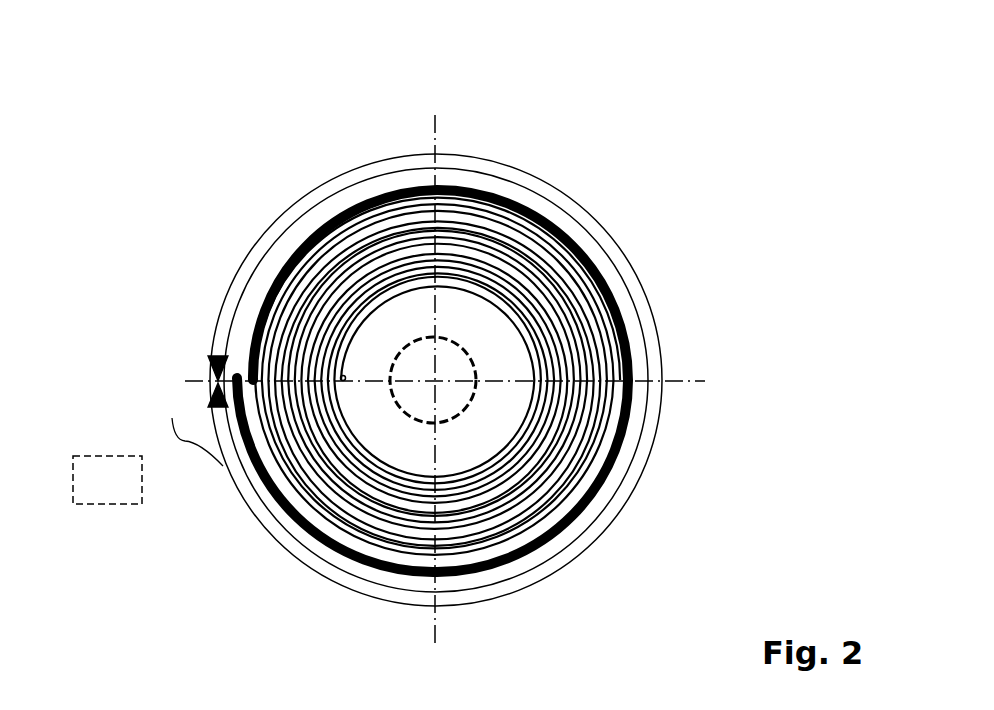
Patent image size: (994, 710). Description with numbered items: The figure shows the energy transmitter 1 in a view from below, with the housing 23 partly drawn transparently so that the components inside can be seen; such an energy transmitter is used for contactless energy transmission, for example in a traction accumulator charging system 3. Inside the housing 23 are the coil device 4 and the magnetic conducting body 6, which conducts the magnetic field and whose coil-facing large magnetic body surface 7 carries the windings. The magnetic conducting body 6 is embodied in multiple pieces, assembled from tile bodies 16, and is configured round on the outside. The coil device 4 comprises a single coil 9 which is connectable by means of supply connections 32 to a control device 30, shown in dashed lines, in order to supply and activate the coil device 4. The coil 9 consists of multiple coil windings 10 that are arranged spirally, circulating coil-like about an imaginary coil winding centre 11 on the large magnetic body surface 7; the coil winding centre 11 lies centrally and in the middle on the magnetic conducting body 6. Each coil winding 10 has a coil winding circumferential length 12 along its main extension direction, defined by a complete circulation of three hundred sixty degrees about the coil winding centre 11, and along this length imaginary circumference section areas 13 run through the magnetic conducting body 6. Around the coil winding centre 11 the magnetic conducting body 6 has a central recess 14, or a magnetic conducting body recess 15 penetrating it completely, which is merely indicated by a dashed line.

The energy transmitter 1 is at (491, 348).
The traction accumulator charging system 3 is at (491, 348).
The coil device 4 is at (719, 123).
The magnetic conducting body 6 is at (441, 365).
The first large magnetic body surface 7 is at (441, 365).
The tile body 16 is at (554, 206).
The coil 9 is at (587, 505).
The coil windings 10 is at (500, 302).
The coil winding centre 11 is at (341, 381).
The coil winding circumferential length 12 is at (227, 305).
The circumference section area 13 is at (287, 262).
The central recess 14 is at (512, 475).
The magnetic conducting body recess 15 is at (457, 415).
The housing 23 is at (466, 156).
The control device 30 is at (427, 385).
The supply connections 32 is at (189, 429).